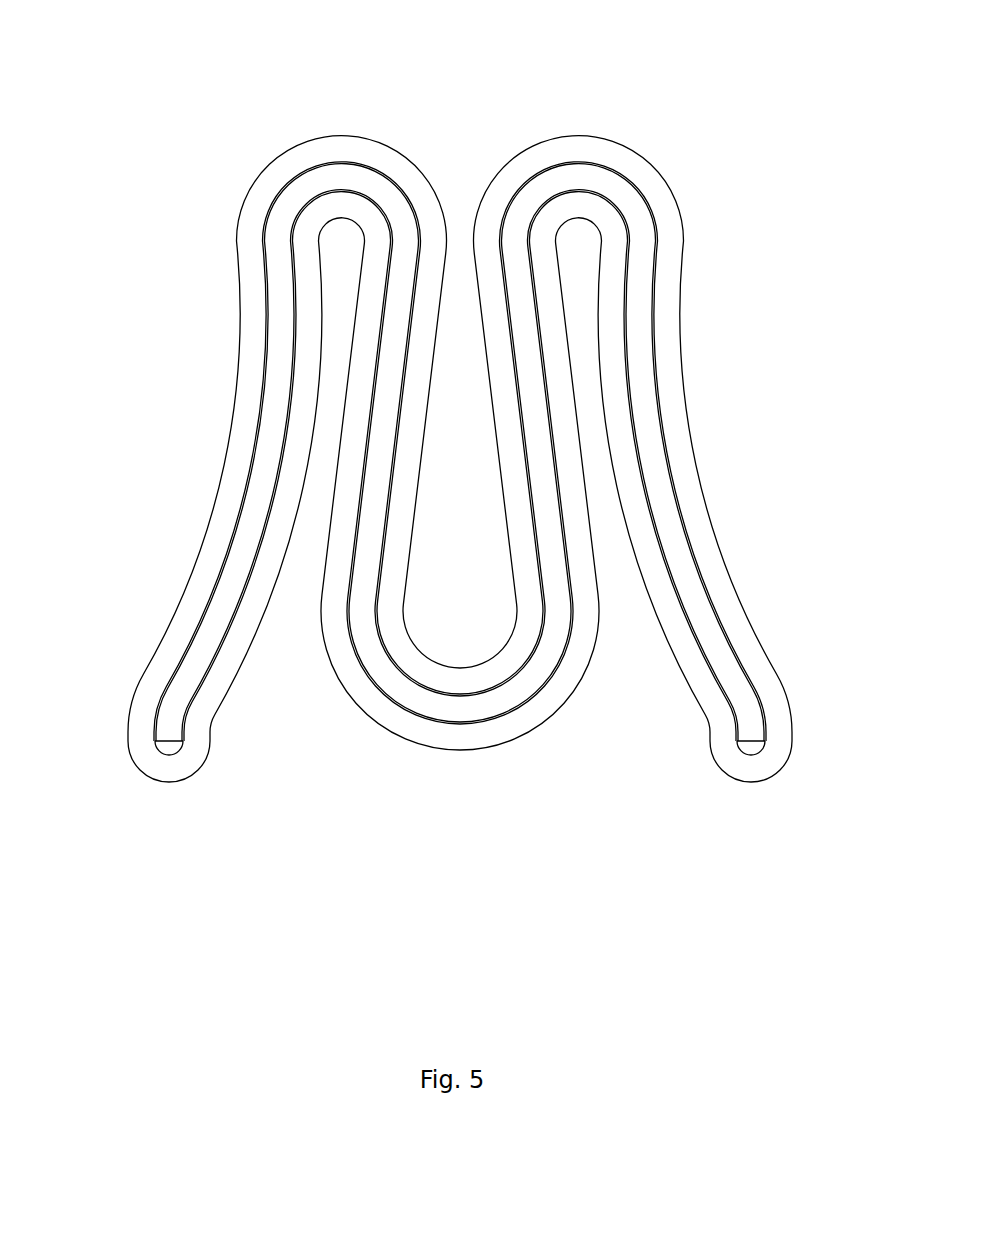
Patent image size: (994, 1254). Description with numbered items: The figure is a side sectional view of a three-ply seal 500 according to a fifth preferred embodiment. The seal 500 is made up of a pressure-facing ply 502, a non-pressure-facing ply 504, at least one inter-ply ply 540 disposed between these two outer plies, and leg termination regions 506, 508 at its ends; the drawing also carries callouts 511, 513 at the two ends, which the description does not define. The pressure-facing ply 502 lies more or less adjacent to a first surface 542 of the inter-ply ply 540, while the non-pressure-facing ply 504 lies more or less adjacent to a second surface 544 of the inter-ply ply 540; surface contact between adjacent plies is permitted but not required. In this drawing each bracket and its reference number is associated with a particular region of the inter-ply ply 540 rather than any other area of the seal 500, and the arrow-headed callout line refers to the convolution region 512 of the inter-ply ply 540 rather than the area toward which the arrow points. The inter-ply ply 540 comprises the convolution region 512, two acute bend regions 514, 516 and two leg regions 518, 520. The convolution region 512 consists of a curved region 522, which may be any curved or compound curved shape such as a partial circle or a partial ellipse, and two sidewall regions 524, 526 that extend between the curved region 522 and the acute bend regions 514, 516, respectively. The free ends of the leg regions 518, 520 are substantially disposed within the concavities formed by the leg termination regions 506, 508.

The seal 500 is at (453, 457).
The pressure-facing ply 502 is at (217, 692).
The non-pressure-facing ply 504 is at (152, 687).
The leg termination region 506 is at (180, 763).
The leg termination region 508 is at (740, 769).
The left end electrode 511 is at (165, 743).
The convolution region 512 is at (594, 728).
The right end electrode 513 is at (750, 748).
The acute bend region 514 is at (225, 170).
The acute bend region 516 is at (480, 170).
The leg region 518 is at (225, 220).
The leg region 520 is at (695, 220).
The curved region 522 is at (560, 727).
The sidewall region 524 is at (468, 221).
The sidewall region 526 is at (451, 222).
The inter-ply ply 540 is at (212, 633).
The first surface 542 is at (228, 613).
The second surface 544 is at (228, 613).